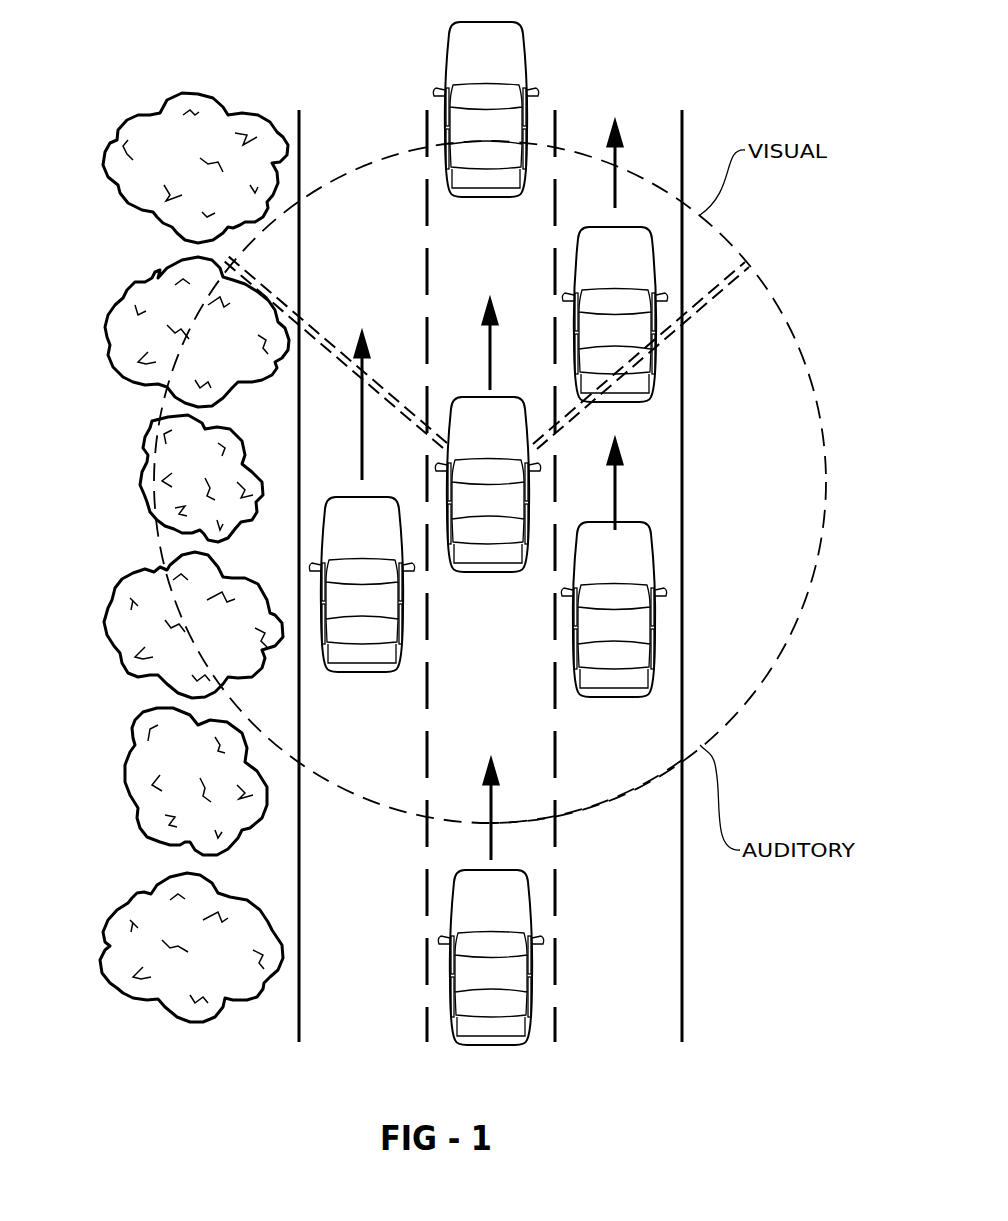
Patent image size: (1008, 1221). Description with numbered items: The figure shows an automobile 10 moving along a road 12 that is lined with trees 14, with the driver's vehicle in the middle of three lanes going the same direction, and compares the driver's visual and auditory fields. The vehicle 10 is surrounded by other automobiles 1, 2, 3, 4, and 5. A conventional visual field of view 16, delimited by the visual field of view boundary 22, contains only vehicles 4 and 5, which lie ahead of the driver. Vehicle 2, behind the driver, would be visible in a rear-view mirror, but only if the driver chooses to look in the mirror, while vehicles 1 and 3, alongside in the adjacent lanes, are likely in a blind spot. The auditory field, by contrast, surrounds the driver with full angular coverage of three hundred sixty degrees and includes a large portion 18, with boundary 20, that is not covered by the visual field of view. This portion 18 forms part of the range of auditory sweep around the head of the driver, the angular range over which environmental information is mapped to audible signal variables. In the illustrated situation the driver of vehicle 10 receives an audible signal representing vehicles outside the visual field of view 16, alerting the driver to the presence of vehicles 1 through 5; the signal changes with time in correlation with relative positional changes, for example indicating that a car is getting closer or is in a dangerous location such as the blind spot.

The automobile 1 is at (354, 539).
The automobile 2 is at (483, 912).
The automobile 3 is at (606, 564).
The automobile 4 is at (607, 269).
The automobile 5 is at (478, 64).
The automobile 10 is at (476, 439).
The road 12 is at (373, 964).
The trees 14 is at (104, 600).
The visual field of view 16 is at (372, 198).
The portion of auditory field 18 is at (708, 705).
The boundary 20 is at (703, 303).
The visual field of view boundary 22 is at (322, 336).